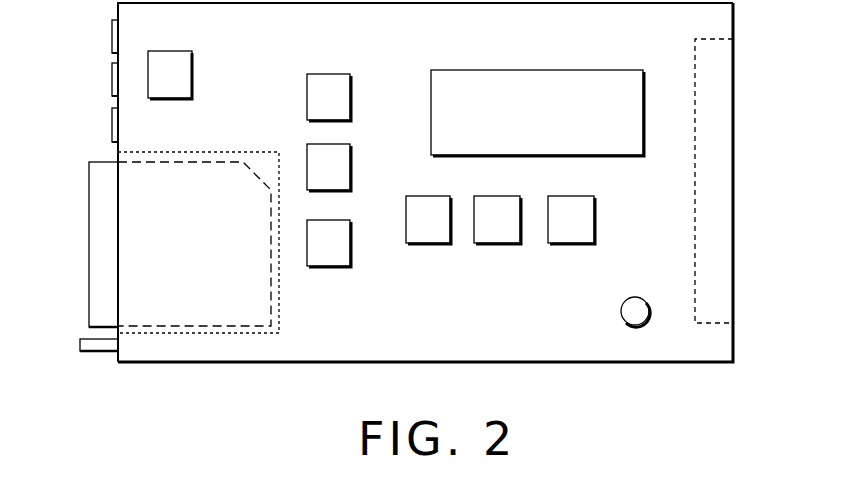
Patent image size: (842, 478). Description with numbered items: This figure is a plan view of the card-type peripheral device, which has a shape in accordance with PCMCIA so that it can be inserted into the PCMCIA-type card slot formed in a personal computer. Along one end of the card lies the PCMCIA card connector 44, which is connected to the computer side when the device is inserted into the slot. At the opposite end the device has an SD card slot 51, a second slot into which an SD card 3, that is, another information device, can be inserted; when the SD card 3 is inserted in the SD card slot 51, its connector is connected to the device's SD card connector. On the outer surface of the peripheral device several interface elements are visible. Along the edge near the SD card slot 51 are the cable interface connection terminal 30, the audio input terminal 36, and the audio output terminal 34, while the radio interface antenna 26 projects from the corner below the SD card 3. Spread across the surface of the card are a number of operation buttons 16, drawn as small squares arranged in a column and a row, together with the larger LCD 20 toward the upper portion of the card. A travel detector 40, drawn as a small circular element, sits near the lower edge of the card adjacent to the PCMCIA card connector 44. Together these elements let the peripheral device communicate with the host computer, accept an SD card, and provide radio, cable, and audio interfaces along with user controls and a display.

The SD card 3 is at (89, 254).
The operation buttons 16 is at (194, 70).
The LCD 20 is at (505, 70).
The radio interface antenna 26 is at (93, 355).
The cable interface connection terminal 30 is at (112, 36).
The audio output terminal 34 is at (112, 133).
The audio input terminal 36 is at (112, 86).
The travel detector 40 is at (631, 325).
The PCMCIA card connector 44 is at (735, 221).
The SD card slot 51 is at (246, 335).